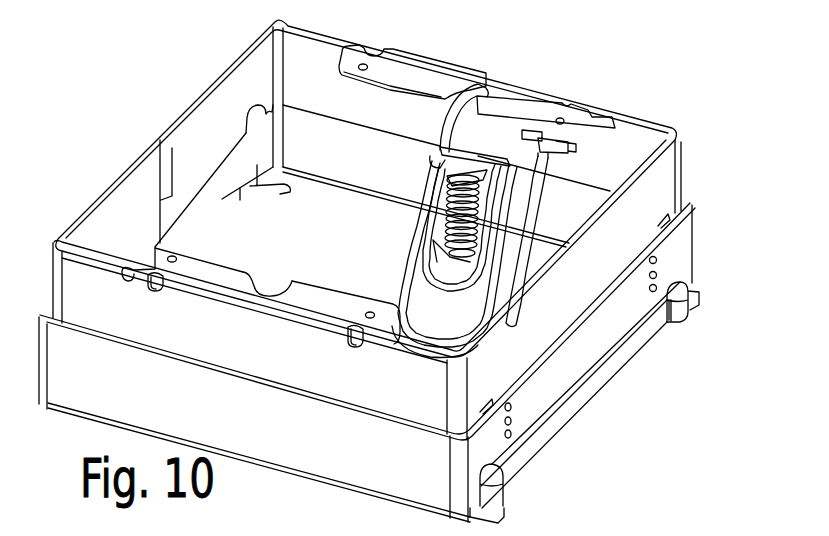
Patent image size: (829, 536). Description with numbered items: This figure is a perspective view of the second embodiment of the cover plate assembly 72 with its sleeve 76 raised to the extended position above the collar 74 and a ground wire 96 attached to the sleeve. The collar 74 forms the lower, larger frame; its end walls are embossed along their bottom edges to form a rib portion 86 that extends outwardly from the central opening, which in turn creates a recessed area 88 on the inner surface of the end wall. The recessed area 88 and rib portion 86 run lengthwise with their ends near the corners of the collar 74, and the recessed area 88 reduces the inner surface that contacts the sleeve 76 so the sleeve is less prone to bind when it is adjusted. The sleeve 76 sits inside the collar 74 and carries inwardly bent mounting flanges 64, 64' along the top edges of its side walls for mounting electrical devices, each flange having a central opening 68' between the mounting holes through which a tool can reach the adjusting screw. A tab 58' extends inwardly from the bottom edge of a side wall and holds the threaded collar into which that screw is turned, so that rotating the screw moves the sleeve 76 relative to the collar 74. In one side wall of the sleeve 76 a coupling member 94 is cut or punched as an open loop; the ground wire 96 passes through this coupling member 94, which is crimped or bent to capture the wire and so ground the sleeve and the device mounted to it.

The mounting flange 64 is at (160, 216).
The mounting flange 64' is at (417, 60).
The tab 58' is at (527, 185).
The coupling member 94 is at (588, 143).
The sleeve 76 is at (664, 178).
The cover plate assembly 72 is at (719, 211).
The recessed area 88 is at (213, 220).
The central opening 68' is at (292, 255).
The ground wire 96 is at (393, 258).
The collar 74 is at (556, 383).
The rib portion 86 is at (540, 448).